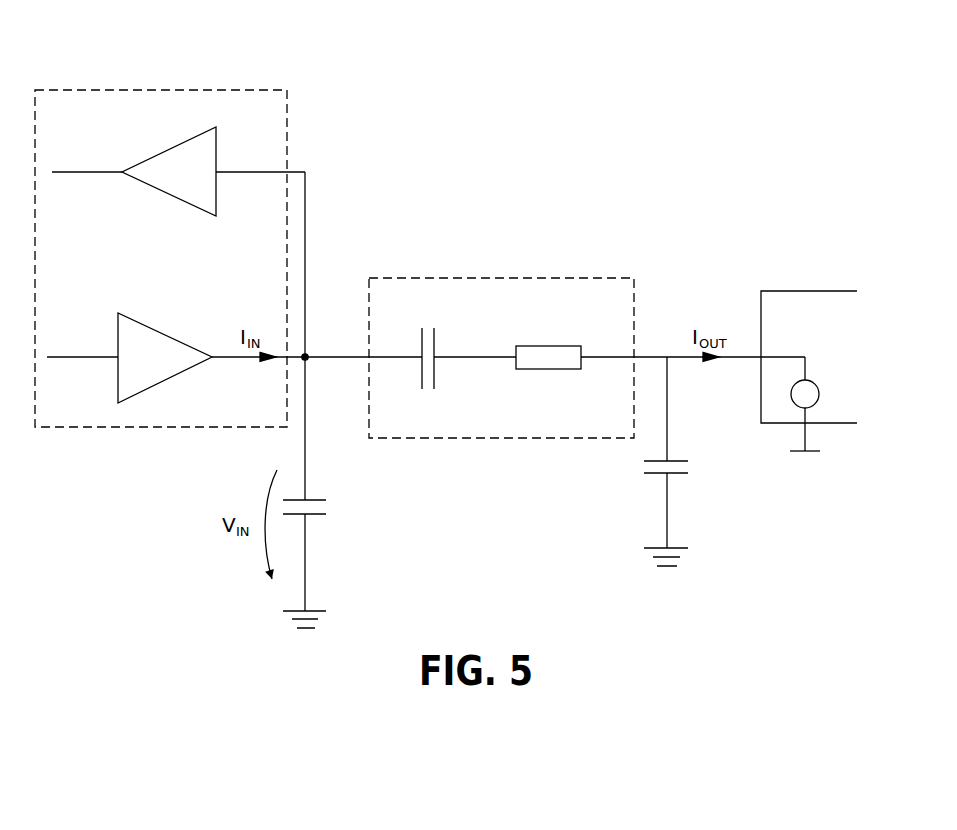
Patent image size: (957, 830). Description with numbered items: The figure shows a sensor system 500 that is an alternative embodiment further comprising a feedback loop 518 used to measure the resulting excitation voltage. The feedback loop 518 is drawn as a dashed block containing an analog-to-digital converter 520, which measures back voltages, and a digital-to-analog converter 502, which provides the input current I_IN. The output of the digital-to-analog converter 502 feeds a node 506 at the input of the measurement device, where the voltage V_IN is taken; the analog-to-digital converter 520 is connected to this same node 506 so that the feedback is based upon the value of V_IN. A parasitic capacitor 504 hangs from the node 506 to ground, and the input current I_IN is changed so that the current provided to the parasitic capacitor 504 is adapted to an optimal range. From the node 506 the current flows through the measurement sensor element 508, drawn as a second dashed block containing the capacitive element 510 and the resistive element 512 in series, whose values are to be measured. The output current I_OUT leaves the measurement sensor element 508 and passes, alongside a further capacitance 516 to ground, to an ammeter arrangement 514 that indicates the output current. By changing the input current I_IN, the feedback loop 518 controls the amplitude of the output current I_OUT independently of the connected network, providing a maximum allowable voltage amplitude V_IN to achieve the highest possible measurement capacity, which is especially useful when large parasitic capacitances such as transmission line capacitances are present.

The sensor system 500 is at (132, 39).
The digital-to-analog converter 502 is at (157, 328).
The parasitic capacitor 504 is at (328, 533).
The node 506 is at (308, 352).
The measurement sensor element 508 is at (580, 278).
The capacitive element 510 is at (439, 322).
The resistive element 512 is at (521, 341).
The ammeter load 514 is at (808, 291).
The capacitor 516 is at (691, 486).
The feedback loop 518 is at (265, 90).
The analog-to-digital converter 520 is at (173, 145).